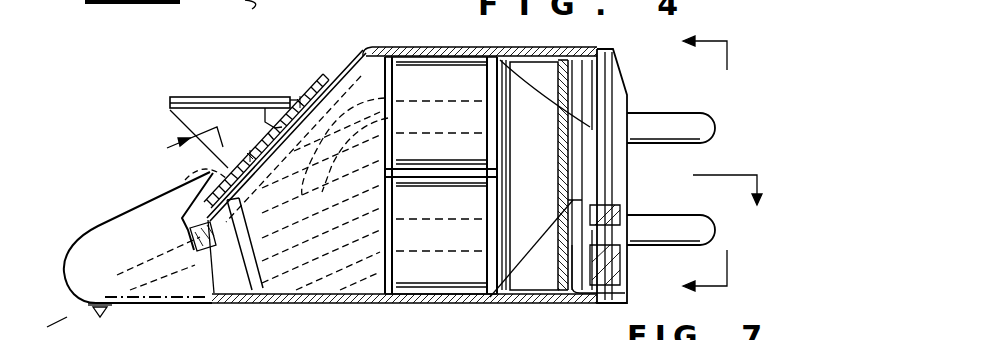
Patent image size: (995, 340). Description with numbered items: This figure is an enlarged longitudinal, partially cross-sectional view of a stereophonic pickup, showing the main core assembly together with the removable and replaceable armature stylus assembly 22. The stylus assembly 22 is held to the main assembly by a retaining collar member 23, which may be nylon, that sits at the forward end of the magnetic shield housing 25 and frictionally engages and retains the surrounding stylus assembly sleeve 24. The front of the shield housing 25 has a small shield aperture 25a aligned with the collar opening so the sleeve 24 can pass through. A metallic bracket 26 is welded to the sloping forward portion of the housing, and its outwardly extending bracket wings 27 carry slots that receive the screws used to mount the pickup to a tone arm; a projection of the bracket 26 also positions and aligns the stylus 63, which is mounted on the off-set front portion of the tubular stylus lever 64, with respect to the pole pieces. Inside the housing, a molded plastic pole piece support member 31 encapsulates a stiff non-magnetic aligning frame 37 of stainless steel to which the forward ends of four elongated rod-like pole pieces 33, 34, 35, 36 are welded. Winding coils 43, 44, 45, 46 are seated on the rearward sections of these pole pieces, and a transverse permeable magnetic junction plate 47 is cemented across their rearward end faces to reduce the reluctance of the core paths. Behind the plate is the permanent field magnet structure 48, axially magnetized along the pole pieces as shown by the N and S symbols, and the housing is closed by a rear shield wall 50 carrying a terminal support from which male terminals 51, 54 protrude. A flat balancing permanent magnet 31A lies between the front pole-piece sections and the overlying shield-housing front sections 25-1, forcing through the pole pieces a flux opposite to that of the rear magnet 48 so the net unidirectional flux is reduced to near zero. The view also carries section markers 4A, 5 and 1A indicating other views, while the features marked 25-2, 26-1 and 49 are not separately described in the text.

The armature stylus assembly 22 is at (88, 226).
The retaining collar member 23 is at (190, 240).
The stylus assembly sleeve 24 is at (289, 292).
The shield housing 25 is at (410, 22).
The shield-housing front sections 25-1 is at (300, 100).
The housing inner portion 25-2 is at (178, 244).
The shield aperture 25a is at (195, 262).
The bracket 26 is at (184, 93).
The bracket portion 26-1 is at (187, 175).
The bracket wings 27 is at (250, 80).
The pole piece support member 31 is at (348, 92).
The balancing permanent magnet 31A is at (325, 194).
The pole piece 33 is at (441, 175).
The pole piece 34 is at (413, 141).
The pole piece 35 is at (439, 237).
The pole piece 36 is at (470, 210).
The aligning frame 37 is at (287, 194).
The winding coil 43 is at (446, 93).
The winding coil 44 is at (440, 72).
The winding coil 45 is at (441, 261).
The winding coil 46 is at (430, 277).
The magnetic junction plate 47 is at (508, 116).
The permanent field magnet structure 48 is at (556, 73).
The end block 49 is at (620, 81).
The rear shield wall 50 is at (570, 85).
The male terminal 51 is at (687, 117).
The male terminal 54 is at (690, 222).
The stylus 63 is at (102, 314).
The stylus lever 64 is at (112, 308).
The section line 4A is at (176, 147).
The section line 5 is at (693, 164).
The section line 1A is at (731, 203).